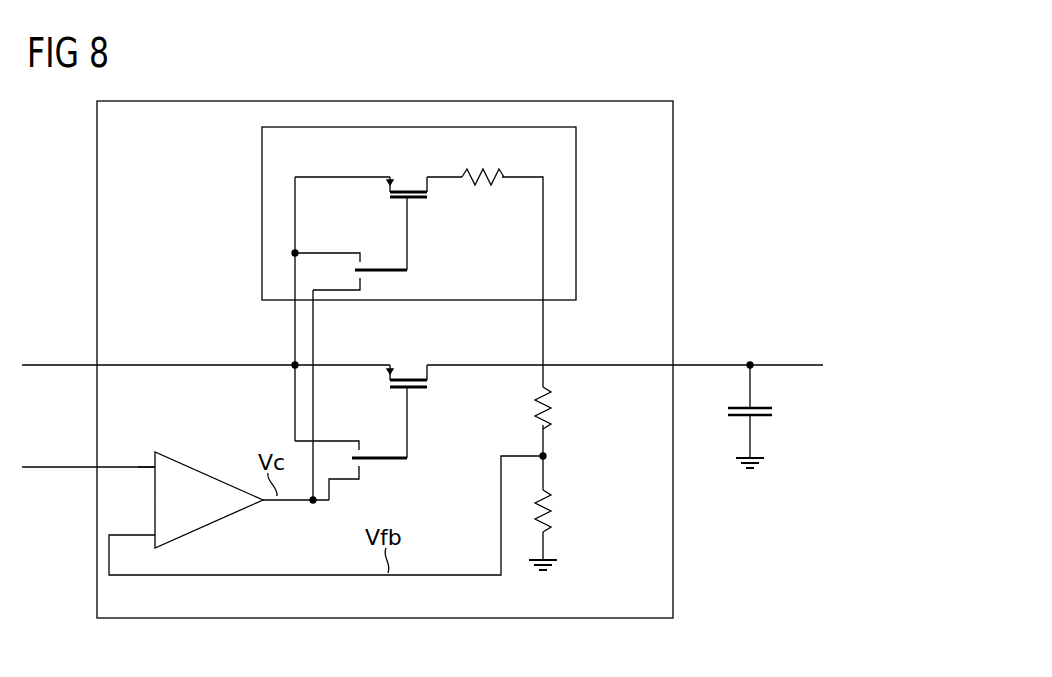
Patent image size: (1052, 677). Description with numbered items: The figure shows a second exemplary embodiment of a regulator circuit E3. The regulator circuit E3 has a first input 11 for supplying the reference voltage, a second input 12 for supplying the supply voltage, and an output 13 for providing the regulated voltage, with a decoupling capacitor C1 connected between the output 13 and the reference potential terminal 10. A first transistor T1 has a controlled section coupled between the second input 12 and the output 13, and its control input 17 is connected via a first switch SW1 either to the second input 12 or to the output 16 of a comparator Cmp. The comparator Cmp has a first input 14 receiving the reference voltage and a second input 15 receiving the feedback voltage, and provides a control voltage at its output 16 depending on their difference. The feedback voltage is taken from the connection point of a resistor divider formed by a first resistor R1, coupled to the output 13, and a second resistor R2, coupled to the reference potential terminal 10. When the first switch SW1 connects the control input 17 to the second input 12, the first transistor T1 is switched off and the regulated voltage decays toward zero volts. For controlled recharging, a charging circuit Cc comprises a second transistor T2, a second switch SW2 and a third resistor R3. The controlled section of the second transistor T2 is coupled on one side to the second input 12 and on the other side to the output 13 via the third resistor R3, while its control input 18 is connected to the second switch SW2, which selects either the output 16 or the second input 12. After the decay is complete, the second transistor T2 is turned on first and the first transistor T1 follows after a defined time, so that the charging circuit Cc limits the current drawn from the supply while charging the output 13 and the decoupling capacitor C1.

The reference potential terminal 10 is at (556, 565).
The first input 11 is at (94, 471).
The second input 12 is at (94, 369).
The output 13 is at (676, 367).
The first input of the comparator 14 is at (150, 463).
The second input of the comparator 15 is at (152, 532).
The output of the comparator 16 is at (263, 506).
The control input of the first transistor 17 is at (410, 388).
The control input of the second transistor 18 is at (410, 200).
The regulator circuit E3 is at (79, 571).
The comparator Cmp is at (207, 472).
The charging circuit Cc is at (577, 213).
The first transistor T1 is at (405, 378).
The second transistor T2 is at (405, 190).
The first switch SW1 is at (378, 456).
The second switch SW2 is at (378, 268).
The first resistor R1 is at (551, 395).
The second resistor R2 is at (551, 499).
The third resistor R3 is at (483, 192).
The decoupling capacitor C1 is at (772, 410).